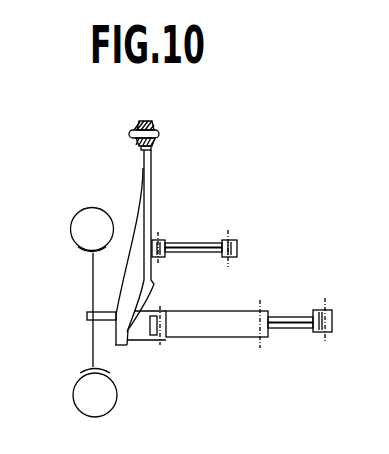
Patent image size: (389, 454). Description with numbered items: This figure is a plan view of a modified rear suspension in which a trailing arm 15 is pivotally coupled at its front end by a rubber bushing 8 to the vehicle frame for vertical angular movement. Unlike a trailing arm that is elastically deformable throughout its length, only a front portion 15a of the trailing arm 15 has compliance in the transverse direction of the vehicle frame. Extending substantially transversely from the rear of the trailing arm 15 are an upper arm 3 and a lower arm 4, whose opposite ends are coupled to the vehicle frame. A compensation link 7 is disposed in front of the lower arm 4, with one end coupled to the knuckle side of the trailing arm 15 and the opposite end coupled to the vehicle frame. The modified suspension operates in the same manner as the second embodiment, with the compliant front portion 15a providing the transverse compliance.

The upper arm 3 is at (207, 320).
The lower arm 4 is at (287, 318).
The compensation link 7 is at (195, 241).
The rubber bushing 8 is at (153, 124).
The trailing arm 15 is at (132, 244).
The front portion 15a is at (160, 157).